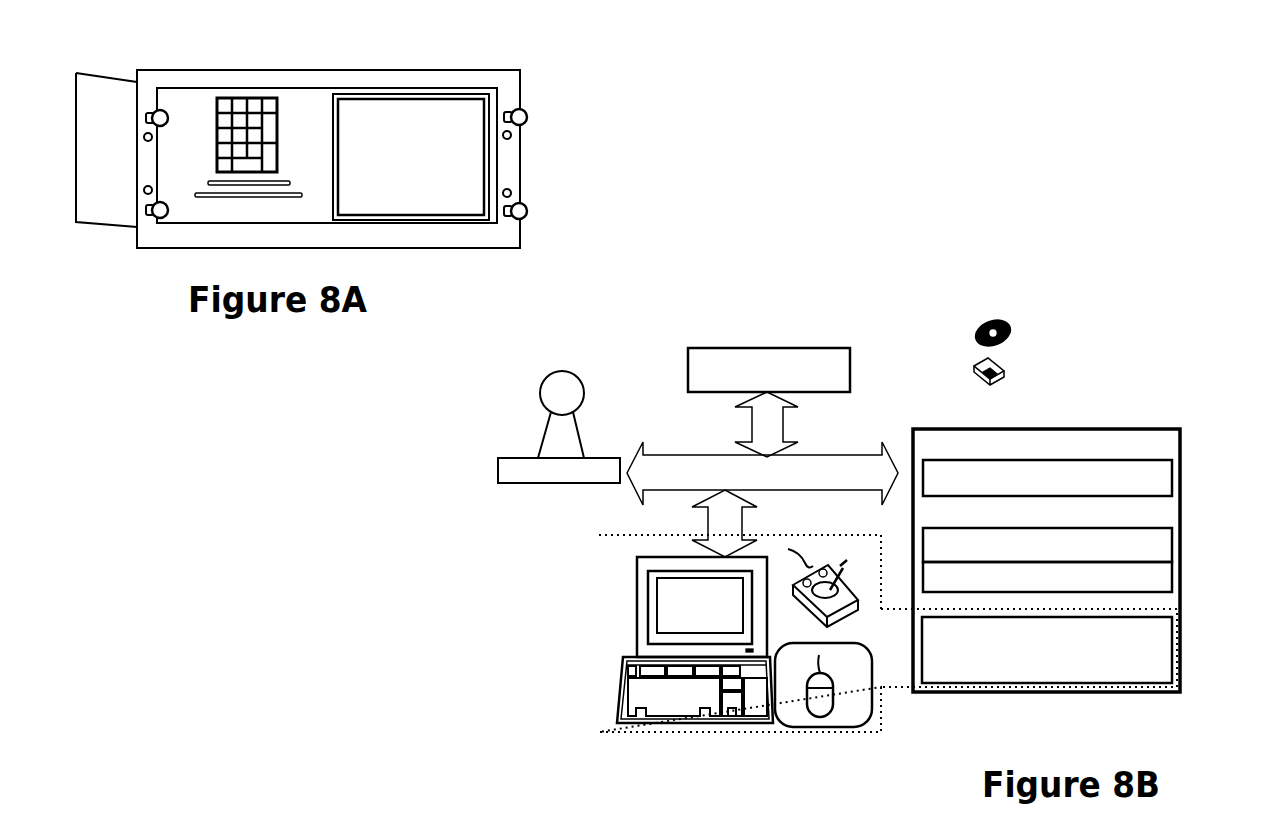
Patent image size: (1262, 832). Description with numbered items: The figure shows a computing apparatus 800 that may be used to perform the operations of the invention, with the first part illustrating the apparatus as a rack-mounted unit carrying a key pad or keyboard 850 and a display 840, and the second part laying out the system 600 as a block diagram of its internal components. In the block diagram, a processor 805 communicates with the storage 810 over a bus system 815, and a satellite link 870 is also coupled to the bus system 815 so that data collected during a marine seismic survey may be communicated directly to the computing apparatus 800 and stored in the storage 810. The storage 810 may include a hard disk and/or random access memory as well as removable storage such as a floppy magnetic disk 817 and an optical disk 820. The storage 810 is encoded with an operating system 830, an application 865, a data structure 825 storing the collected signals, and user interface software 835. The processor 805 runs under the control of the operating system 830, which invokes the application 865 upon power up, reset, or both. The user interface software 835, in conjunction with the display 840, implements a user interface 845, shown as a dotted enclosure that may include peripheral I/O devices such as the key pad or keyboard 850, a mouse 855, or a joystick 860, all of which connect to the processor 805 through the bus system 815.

In FIG. 8A, the computing apparatus 800 is at (351, 138).
In FIG. 8A, the key pad or keyboard 850 is at (270, 100).
In FIG. 8B, the key pad or keyboard 850 is at (618, 690).
In FIG. 8A, the display 840 is at (452, 100).
In FIG. 8B, the display 840 is at (636, 569).
In FIG. 8B, the computer system 600 is at (1112, 242).
In FIG. 8B, the processor 805 is at (688, 350).
In FIG. 8B, the bus system 815 is at (697, 457).
In FIG. 8B, the satellite link 870 is at (497, 472).
In FIG. 8B, the user interface 845 is at (598, 734).
In FIG. 8B, the mouse 855 is at (820, 718).
In FIG. 8B, the joystick 860 is at (810, 558).
In FIG. 8B, the optical disk 820 is at (1012, 325).
In FIG. 8B, the floppy magnetic disk 817 is at (1007, 370).
In FIG. 8B, the storage 810 is at (1182, 427).
In FIG. 8B, the operating system 830 is at (1173, 480).
In FIG. 8B, the application 865 is at (1173, 545).
In FIG. 8B, the data structure 825 is at (1173, 572).
In FIG. 8B, the user interface software 835 is at (1173, 645).